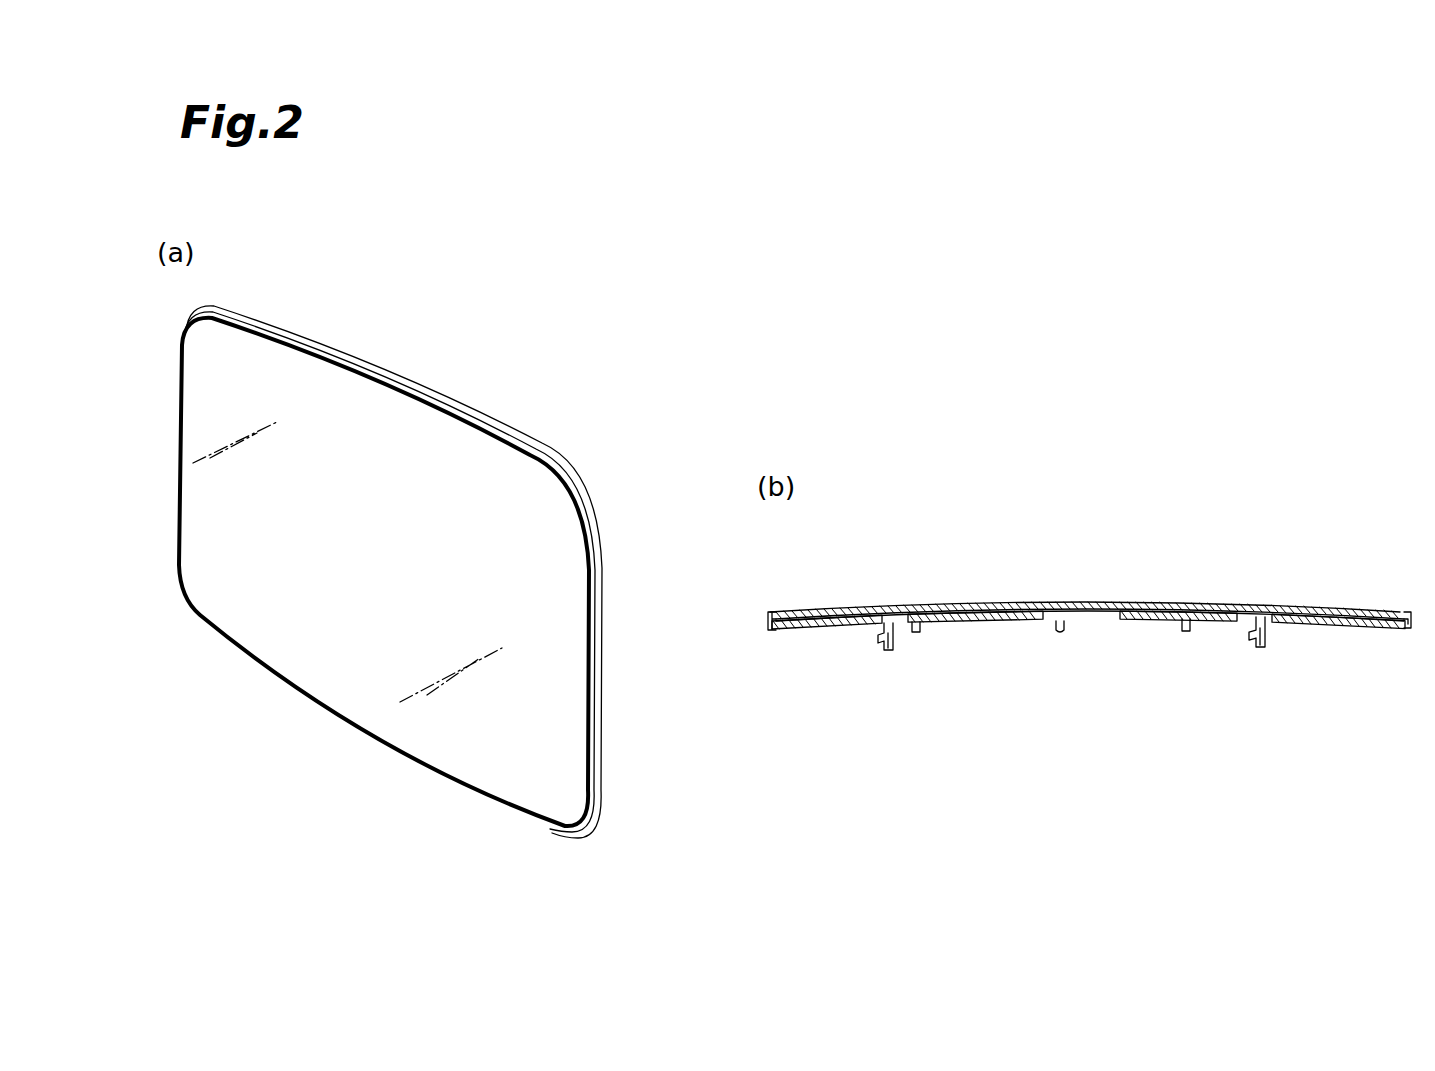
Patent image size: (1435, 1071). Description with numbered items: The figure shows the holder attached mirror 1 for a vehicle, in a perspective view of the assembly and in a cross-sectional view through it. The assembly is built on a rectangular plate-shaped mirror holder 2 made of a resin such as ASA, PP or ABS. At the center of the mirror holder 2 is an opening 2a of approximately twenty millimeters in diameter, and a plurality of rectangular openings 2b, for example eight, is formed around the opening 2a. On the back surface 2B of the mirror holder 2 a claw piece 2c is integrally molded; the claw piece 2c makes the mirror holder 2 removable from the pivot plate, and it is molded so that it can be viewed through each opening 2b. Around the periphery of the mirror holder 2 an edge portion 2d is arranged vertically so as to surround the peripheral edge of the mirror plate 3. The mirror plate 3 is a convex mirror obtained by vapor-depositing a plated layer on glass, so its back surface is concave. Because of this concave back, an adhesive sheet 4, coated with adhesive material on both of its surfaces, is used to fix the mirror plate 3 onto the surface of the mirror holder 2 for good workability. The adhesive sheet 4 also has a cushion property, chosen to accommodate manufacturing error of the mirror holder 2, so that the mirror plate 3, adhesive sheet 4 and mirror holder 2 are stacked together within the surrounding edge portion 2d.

The holder attached mirror 1 is at (507, 363).
The mirror holder 2 is at (597, 501).
The opening 2a is at (1087, 620).
The rectangular openings 2b is at (913, 636).
The back surface 2B is at (827, 630).
The claw piece 2c is at (884, 651).
The edge portion 2d is at (388, 376).
The mirror plate 3 is at (348, 673).
The adhesive sheet 4 is at (1058, 612).